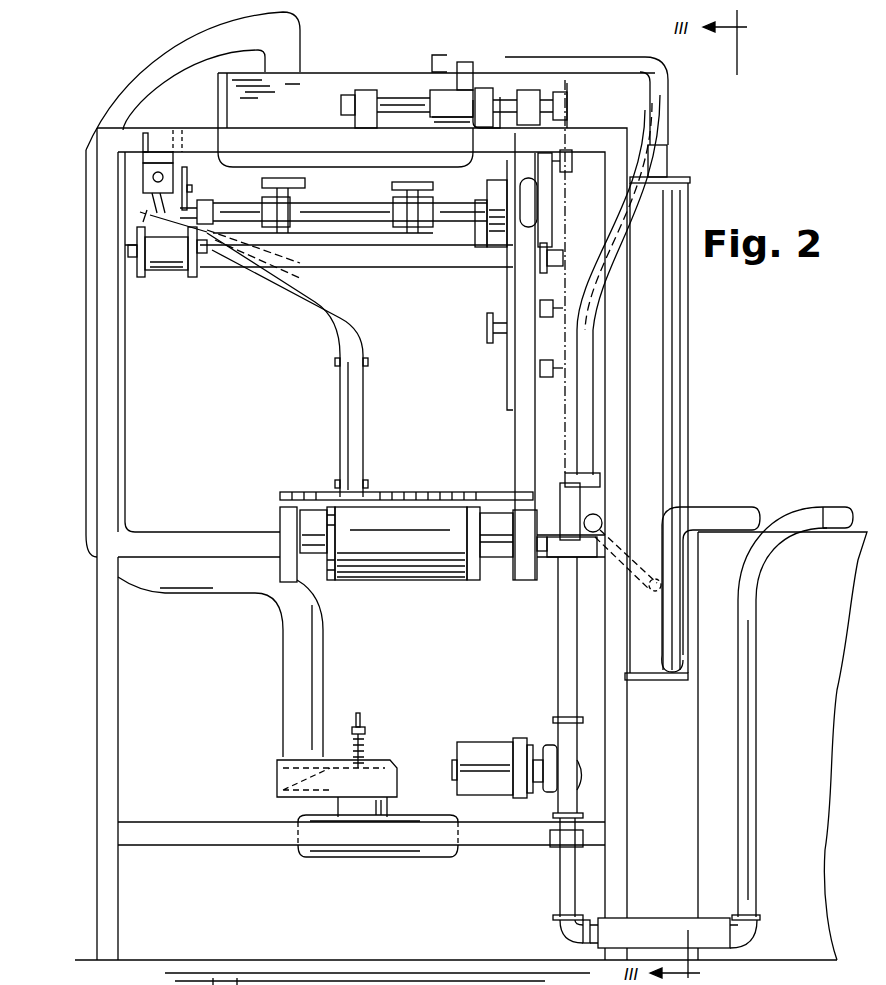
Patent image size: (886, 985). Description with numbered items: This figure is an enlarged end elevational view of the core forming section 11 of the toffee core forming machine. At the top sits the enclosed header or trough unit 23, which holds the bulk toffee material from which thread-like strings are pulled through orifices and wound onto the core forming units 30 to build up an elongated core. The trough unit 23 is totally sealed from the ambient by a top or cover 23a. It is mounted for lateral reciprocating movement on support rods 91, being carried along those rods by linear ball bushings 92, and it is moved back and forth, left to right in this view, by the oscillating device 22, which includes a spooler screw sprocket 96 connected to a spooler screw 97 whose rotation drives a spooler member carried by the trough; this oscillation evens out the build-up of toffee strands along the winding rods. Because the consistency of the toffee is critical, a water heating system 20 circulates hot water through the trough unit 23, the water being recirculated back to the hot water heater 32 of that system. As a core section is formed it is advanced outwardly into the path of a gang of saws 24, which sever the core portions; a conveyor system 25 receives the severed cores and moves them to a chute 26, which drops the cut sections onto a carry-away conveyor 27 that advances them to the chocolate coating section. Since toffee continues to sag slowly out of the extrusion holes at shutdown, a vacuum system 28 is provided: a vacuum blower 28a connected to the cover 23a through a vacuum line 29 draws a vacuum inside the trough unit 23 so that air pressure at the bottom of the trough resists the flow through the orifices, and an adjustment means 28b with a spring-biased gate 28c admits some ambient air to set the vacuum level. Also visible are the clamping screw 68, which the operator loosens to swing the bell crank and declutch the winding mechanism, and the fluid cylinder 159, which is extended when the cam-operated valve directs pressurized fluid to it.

The core forming section 11 is at (87, 233).
The water heating system 20 is at (553, 745).
The oscillating device 22 is at (453, 97).
The header or trough unit 23 is at (323, 81).
The top or cover 23a is at (388, 72).
The gang of saws 24 is at (185, 167).
The conveyor system 25 is at (175, 270).
The chute 26 is at (303, 300).
The carry-away conveyor 27 is at (332, 624).
The vacuum system 28 is at (393, 760).
The vacuum blower 28a is at (338, 857).
The adjustment means 28b is at (359, 713).
The spring-biased gate 28c is at (277, 788).
The vacuum line 29 is at (163, 53).
The core forming units 30 is at (487, 200).
The hot water heater 32 is at (810, 628).
The clamping screw 68 is at (487, 337).
The support rods 91 is at (347, 223).
The ball bushing 92 is at (263, 210).
The spooler screw sprocket 96 is at (577, 106).
The spooler screw 97 is at (507, 100).
The cylinder 159 is at (147, 172).